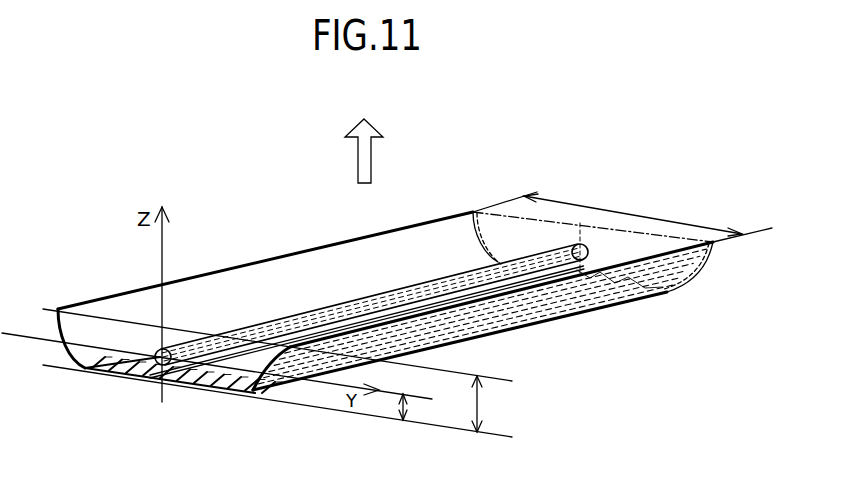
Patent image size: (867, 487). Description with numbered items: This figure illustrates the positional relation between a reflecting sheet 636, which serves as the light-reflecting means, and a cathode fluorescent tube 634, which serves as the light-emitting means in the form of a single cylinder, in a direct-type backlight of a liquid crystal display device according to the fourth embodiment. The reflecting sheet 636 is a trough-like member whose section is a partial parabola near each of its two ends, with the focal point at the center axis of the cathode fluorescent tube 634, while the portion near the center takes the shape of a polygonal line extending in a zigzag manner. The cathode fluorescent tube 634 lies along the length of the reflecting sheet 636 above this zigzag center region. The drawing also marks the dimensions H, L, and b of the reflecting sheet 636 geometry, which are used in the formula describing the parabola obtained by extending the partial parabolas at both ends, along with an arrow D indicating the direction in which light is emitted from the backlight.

The cathode fluorescent tube 634 is at (257, 322).
The reflecting sheet 636 is at (423, 213).
The light emission direction D is at (364, 138).
The dimension L is at (412, 408).
The dimension H is at (484, 404).
The dimension b is at (622, 217).